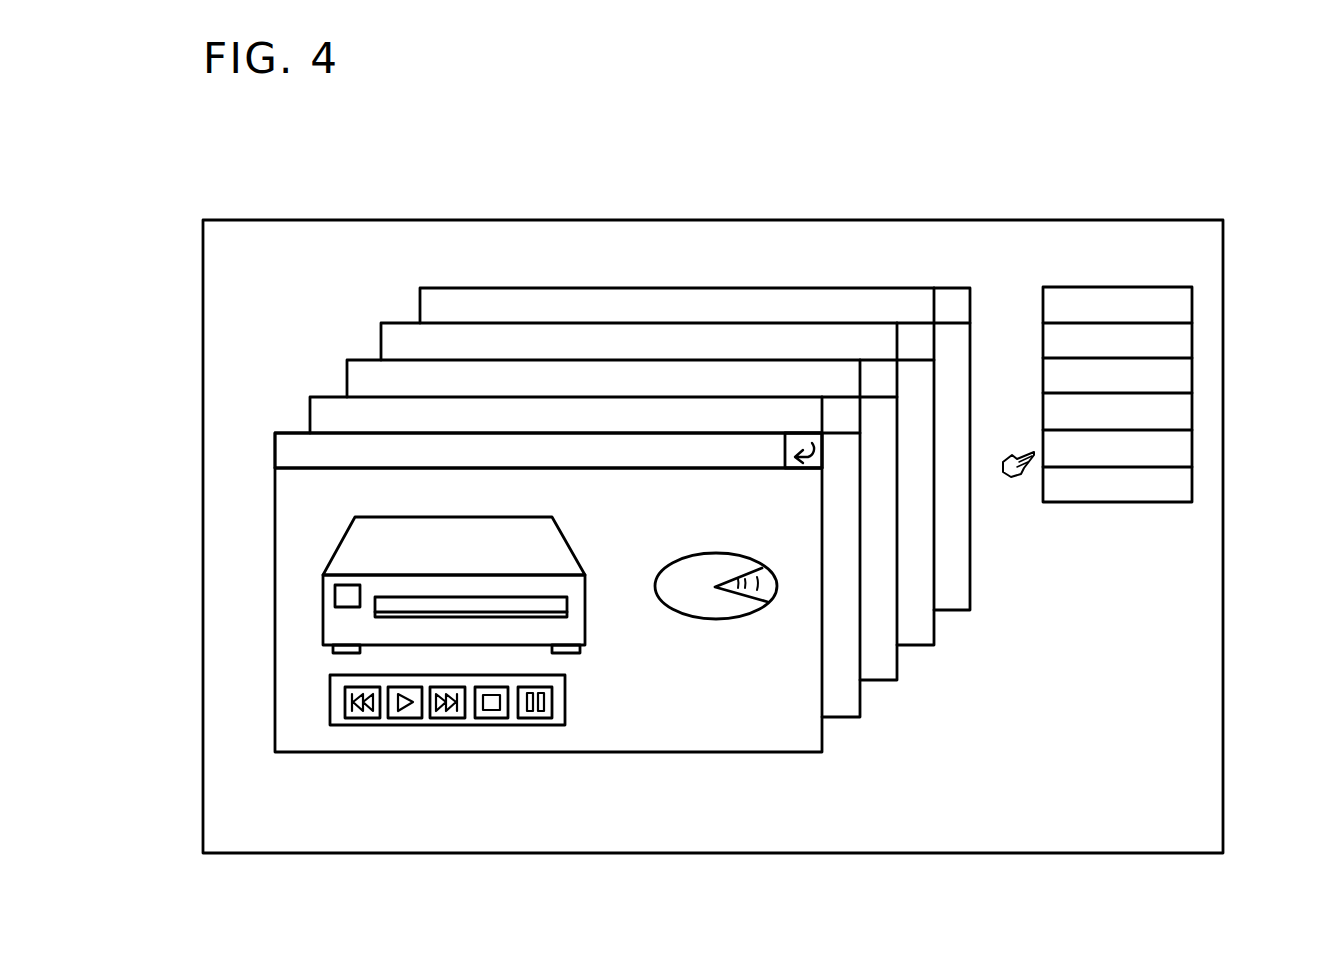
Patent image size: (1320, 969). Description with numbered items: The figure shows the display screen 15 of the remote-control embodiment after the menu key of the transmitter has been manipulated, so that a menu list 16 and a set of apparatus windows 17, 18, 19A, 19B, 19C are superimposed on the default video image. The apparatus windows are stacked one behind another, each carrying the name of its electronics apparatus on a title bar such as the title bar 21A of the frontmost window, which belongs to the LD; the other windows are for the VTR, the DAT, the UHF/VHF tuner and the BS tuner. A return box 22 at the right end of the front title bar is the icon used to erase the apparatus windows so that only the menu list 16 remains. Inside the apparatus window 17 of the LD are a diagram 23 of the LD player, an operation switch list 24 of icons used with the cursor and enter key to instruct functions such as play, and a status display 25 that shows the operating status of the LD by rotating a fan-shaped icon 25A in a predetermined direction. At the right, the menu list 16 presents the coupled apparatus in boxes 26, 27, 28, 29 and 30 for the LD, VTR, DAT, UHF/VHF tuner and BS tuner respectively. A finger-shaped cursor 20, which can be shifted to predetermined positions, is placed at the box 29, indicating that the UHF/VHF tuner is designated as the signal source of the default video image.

The display screen 15 is at (893, 221).
The menu list 16 is at (1123, 287).
The apparatus window 17 is at (815, 740).
The apparatus window 18 is at (854, 705).
The apparatus window 19A is at (892, 667).
The apparatus window 19B is at (928, 630).
The apparatus window 19C is at (962, 595).
The finger-shaped cursor 20 is at (1005, 475).
The title bar 21A is at (285, 455).
The return box 22 is at (795, 433).
The diagram of the LD 23 is at (340, 540).
The operation switch list 24 is at (335, 705).
The status display 25 is at (725, 726).
The fan-shaped icon 25A is at (752, 592).
The box 26 is at (1192, 340).
The box 27 is at (1192, 375).
The box 28 is at (1192, 412).
The box 29 is at (1192, 448).
The box 30 is at (1192, 487).